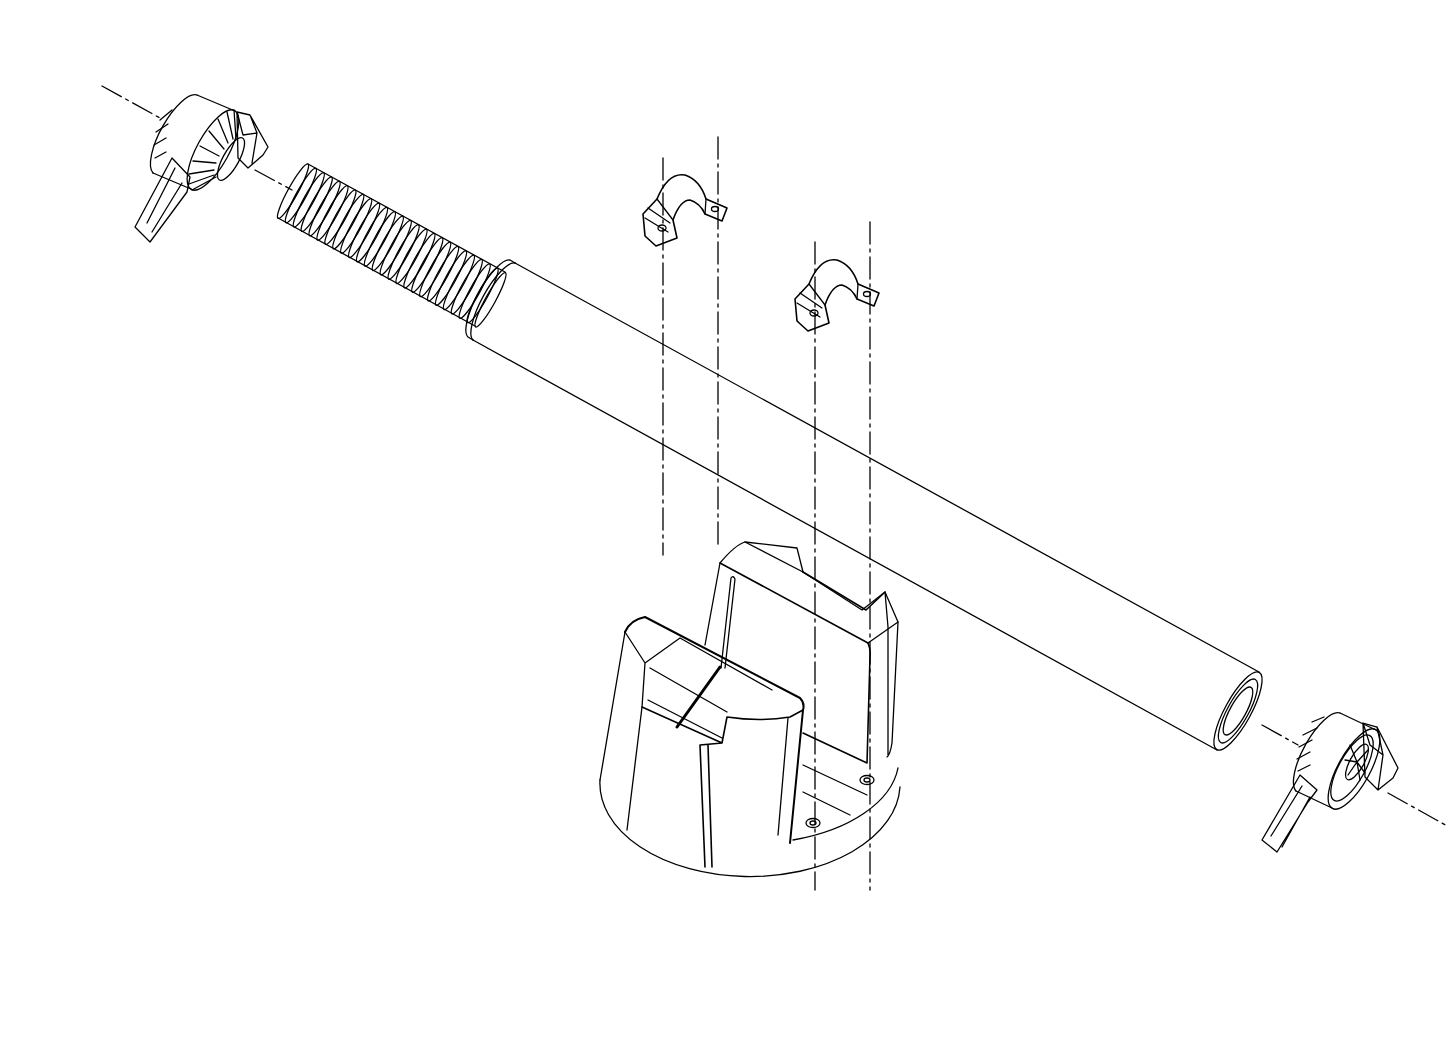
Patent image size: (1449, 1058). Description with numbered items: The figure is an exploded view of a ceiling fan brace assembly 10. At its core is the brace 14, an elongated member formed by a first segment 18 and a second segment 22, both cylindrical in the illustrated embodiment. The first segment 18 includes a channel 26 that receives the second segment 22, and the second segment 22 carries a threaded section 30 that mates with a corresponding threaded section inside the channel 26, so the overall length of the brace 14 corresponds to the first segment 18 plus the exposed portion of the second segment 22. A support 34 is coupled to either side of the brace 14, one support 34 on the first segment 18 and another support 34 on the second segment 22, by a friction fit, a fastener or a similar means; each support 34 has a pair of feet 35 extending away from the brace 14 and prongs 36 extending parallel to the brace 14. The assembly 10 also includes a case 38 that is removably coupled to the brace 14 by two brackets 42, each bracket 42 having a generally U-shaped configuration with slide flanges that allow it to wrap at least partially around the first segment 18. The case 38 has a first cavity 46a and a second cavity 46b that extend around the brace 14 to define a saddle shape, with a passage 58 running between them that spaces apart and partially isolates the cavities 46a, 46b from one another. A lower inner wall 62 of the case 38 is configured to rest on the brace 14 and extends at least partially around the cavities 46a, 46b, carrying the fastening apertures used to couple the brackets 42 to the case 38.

The ceiling fan brace assembly 10 is at (1022, 360).
The brace 14 is at (1187, 615).
The first segment 18 is at (1072, 595).
The second segment 22 is at (362, 274).
The channel 26 is at (1238, 718).
The threaded section 30 is at (378, 215).
The support 34 is at (222, 95).
The feet 35 is at (260, 133).
The prongs 36 is at (175, 105).
The case 38 is at (596, 776).
The bracket 42 is at (682, 192).
The first cavity 46a is at (650, 823).
The second cavity 46b is at (883, 670).
The passage 58 is at (717, 615).
The lower inner wall 62 is at (847, 797).